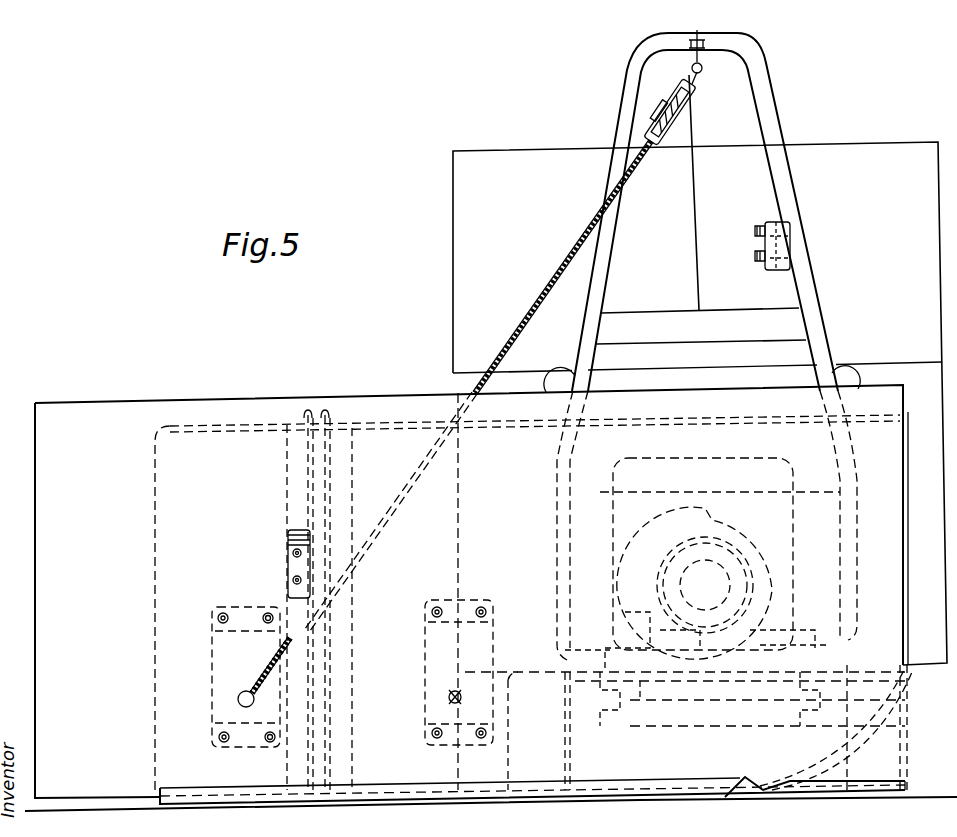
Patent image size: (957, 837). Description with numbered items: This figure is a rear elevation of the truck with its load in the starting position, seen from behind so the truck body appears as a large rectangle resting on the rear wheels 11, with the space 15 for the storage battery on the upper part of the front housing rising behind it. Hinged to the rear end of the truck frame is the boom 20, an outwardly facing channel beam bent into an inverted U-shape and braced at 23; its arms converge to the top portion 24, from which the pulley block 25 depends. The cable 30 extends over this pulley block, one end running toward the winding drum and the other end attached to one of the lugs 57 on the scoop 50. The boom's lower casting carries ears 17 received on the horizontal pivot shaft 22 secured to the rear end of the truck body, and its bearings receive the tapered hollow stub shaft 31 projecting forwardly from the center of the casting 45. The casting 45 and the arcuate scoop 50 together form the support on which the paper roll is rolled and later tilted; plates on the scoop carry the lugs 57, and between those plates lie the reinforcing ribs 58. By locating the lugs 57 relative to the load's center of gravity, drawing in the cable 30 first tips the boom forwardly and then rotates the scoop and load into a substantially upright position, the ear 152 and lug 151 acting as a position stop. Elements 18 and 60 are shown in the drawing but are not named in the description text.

The rear wheels 11 is at (570, 752).
The space 15 is at (700, 403).
The ears 17 is at (704, 688).
The frame leg 18 is at (556, 580).
The boom 20 is at (801, 234).
The horizontal pivot (shaft) 22 is at (840, 648).
The brace 23 is at (754, 310).
The top portion of the boom 24 is at (730, 50).
The pulley block 25 is at (696, 96).
The cable 30 is at (699, 193).
The stub shaft or axle 31 is at (479, 385).
The casting 45 is at (795, 541).
The scoop 50 is at (470, 746).
The lugs 57 is at (243, 691).
The reinforcing ribs 58 is at (294, 753).
The wheel 60 is at (568, 366).
The lug 151 is at (302, 546).
The ear 152 is at (775, 244).